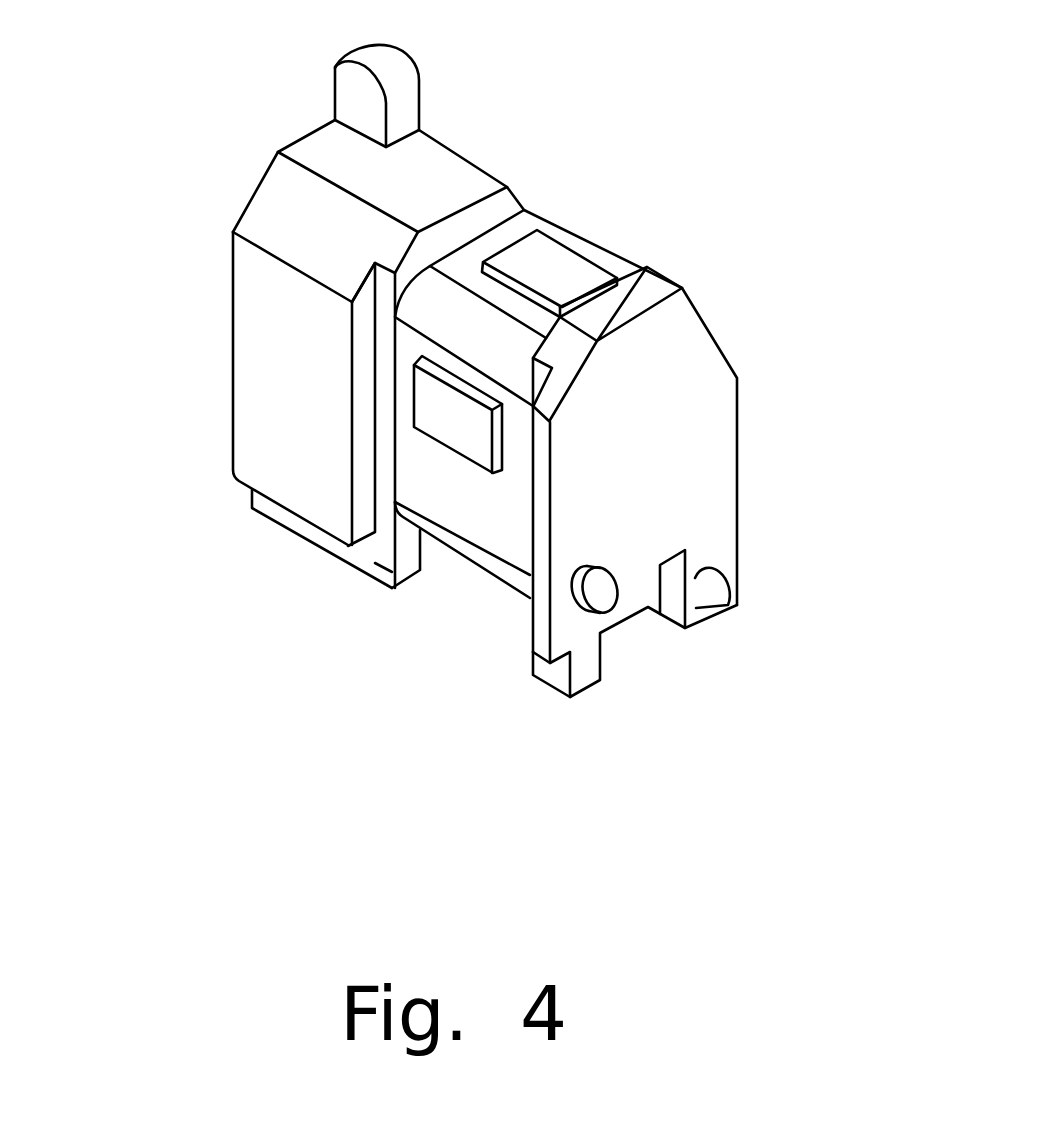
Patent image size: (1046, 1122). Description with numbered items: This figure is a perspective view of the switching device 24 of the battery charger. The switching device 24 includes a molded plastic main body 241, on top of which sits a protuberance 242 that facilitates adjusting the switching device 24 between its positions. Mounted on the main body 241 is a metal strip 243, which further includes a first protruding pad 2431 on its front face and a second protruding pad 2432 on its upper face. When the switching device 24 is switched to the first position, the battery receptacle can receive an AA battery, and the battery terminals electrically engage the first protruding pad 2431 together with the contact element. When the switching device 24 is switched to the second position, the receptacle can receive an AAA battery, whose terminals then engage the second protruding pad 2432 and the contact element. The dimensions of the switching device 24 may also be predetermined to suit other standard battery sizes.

The switching device 24 is at (732, 322).
The main body 241 is at (278, 343).
The protuberance 242 is at (400, 104).
The metal strip 243 is at (467, 498).
The first protruding pad 2431 is at (440, 408).
The second protruding pad 2432 is at (550, 265).